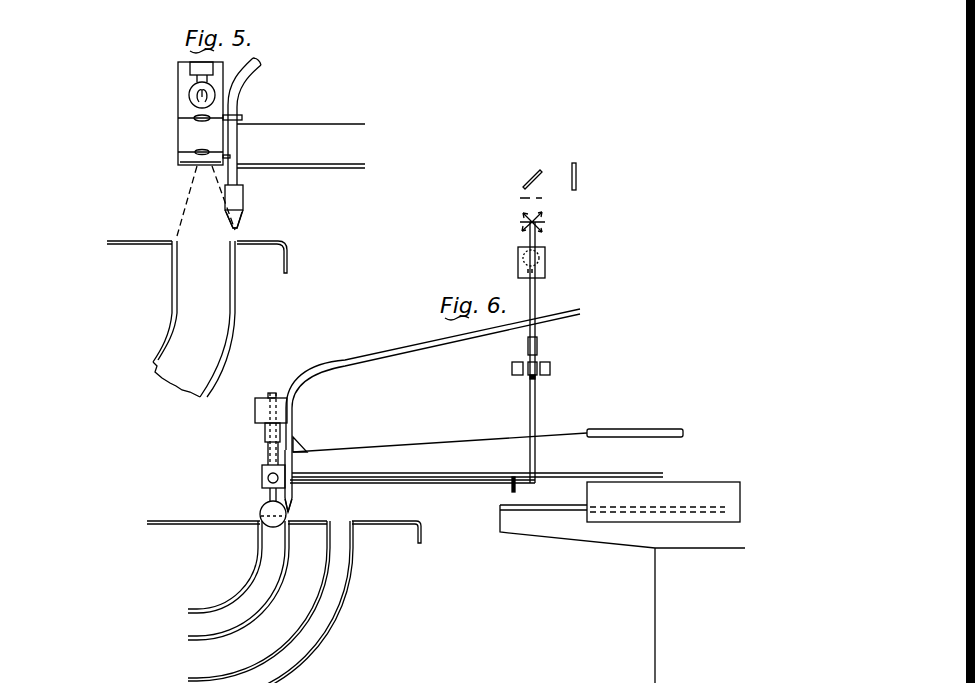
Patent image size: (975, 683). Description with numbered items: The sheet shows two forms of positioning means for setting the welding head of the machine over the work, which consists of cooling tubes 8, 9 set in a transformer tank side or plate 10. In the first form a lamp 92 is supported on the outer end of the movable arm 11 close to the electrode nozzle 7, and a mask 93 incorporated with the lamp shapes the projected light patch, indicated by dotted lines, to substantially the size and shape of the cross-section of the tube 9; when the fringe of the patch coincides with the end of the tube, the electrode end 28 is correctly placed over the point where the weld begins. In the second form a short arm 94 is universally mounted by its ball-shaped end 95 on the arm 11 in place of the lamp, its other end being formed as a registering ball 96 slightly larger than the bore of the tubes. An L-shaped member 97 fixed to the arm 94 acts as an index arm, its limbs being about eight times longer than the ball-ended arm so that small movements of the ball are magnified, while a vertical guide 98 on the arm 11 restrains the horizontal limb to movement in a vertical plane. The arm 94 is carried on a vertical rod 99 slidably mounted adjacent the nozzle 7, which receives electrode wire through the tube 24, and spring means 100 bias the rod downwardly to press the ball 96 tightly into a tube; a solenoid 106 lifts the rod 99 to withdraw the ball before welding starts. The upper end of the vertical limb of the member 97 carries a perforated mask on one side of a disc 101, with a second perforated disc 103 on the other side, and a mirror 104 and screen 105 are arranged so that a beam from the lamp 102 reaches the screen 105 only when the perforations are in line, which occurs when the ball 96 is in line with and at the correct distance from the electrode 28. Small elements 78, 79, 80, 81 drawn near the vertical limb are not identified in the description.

In FIG. 5, the electrode nozzle 7 is at (244, 189).
In FIG. 6, the electrode nozzle 7 is at (292, 488).
In FIG. 6, the cooling tube 8 is at (255, 588).
In FIG. 5, the cooling tube 9 is at (235, 284).
In FIG. 6, the cooling tube 9 is at (345, 572).
In FIG. 5, the transformer tank side 10 is at (138, 241).
In FIG. 6, the transformer tank side 10 is at (374, 523).
In FIG. 5, the arm 11 is at (323, 129).
In FIG. 6, the arm 11 is at (466, 442).
In FIG. 6, the tube 24 is at (481, 340).
In FIG. 5, the electrode end 28 is at (238, 230).
In FIG. 6, the electrode end 28 is at (290, 515).
In FIG. 6, the contact block 78 is at (550, 368).
In FIG. 6, the slider block 79 is at (537, 362).
In FIG. 6, the contact block 80 is at (512, 368).
In FIG. 6, the stop 81 is at (535, 379).
In FIG. 5, the lamp 92 is at (178, 98).
In FIG. 5, the mask 93 is at (178, 165).
In FIG. 6, the short arm 94 is at (270, 484).
In FIG. 6, the end of short arm 95 is at (262, 474).
In FIG. 6, the registering ball 96 is at (262, 511).
In FIG. 6, the L-shaped member 97 is at (527, 340).
In FIG. 6, the vertical guide 98 is at (515, 487).
In FIG. 6, the vertical rod 99 is at (268, 452).
In FIG. 6, the spring means 100 is at (265, 442).
In FIG. 6, the disc 101 is at (543, 223).
In FIG. 6, the lamp 102 is at (545, 262).
In FIG. 6, the perforated disc 103 is at (520, 198).
In FIG. 6, the mirror 104 is at (532, 174).
In FIG. 6, the screen 105 is at (576, 180).
In FIG. 6, the solenoid 106 is at (262, 388).